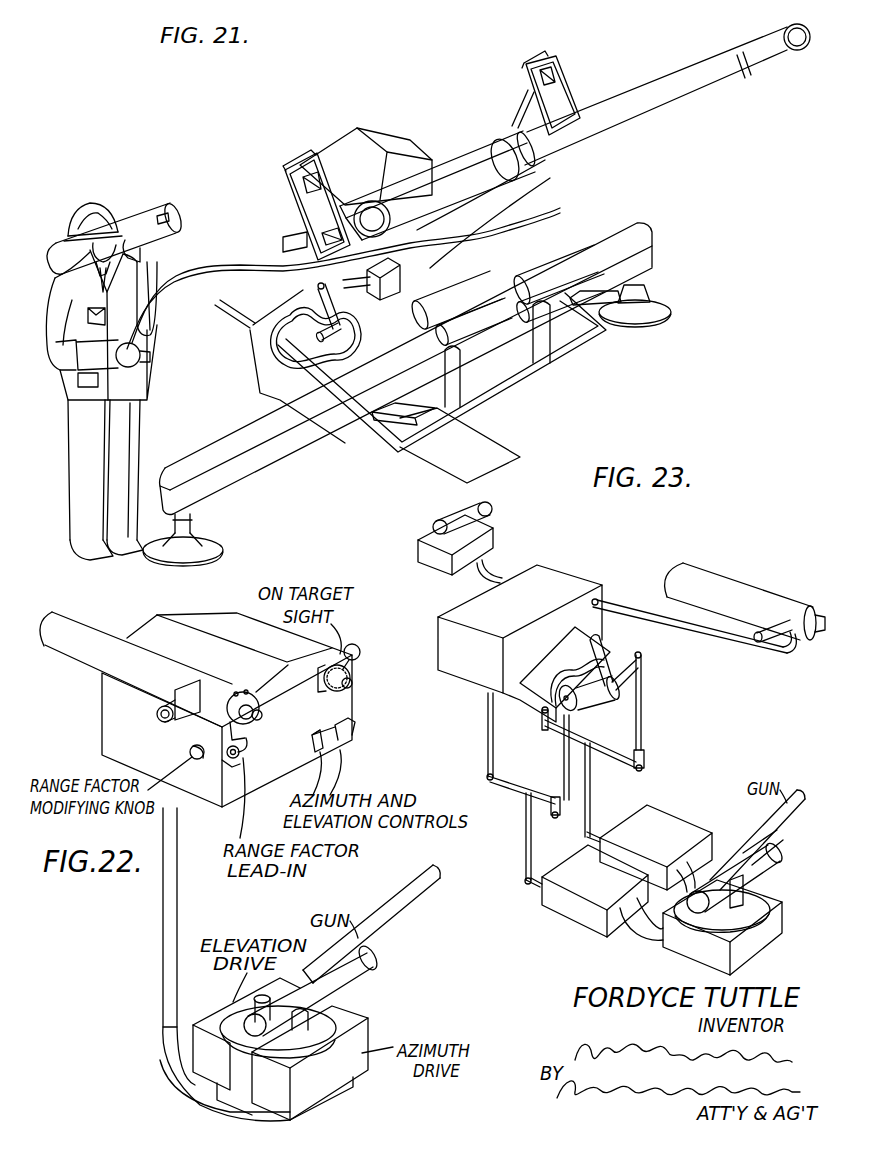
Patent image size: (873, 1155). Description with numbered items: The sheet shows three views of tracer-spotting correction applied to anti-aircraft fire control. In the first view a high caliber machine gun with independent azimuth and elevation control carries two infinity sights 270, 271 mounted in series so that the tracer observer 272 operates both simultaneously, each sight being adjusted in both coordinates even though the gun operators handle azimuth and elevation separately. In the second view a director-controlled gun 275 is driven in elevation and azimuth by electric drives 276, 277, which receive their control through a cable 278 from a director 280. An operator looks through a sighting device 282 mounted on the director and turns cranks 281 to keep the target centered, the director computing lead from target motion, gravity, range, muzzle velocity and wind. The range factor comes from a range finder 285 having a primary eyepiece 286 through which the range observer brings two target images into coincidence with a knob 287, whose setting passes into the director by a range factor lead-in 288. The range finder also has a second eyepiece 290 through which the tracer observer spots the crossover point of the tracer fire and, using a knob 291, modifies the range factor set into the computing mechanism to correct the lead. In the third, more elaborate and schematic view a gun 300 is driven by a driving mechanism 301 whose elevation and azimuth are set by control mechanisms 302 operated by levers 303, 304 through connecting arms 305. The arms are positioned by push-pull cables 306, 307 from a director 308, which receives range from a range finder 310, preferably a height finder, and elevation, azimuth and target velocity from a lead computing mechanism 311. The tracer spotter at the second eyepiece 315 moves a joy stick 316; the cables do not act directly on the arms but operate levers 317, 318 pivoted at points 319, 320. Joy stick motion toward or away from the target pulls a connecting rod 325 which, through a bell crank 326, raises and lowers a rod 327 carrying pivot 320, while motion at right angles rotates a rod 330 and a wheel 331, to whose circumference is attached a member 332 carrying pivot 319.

In FIG. 21, the infinity sight 270 is at (312, 158).
In FIG. 21, the infinity sight 271 is at (526, 68).
In FIG. 21, the tracer observer 272 is at (155, 275).
In FIG. 22, the gun 275 is at (397, 907).
In FIG. 22, the electric drive 276 is at (213, 1020).
In FIG. 22, the electric drive 277 is at (357, 1067).
In FIG. 22, the cable 278 is at (163, 922).
In FIG. 22, the director 280 is at (217, 803).
In FIG. 22, the cranks 281 is at (335, 727).
In FIG. 22, the sighting device 282 is at (352, 660).
In FIG. 22, the range finder 285 is at (90, 670).
In FIG. 22, the primary eyepiece 286 is at (257, 676).
In FIG. 22, the ranging knob 287 is at (222, 760).
In FIG. 22, the range factor lead-in 288 is at (245, 750).
In FIG. 22, the second eyepiece 290 is at (157, 712).
In FIG. 22, the range factor modifying knob 291 is at (190, 751).
In FIG. 23, the gun 300 is at (783, 822).
In FIG. 23, the driving mechanism 301 is at (770, 893).
In FIG. 23, the control mechanisms 302 is at (600, 923).
In FIG. 23, the lever 303 is at (537, 887).
In FIG. 23, the lever 304 is at (598, 830).
In FIG. 23, the connecting arms 305 is at (532, 848).
In FIG. 23, the push-pull cable 306 is at (490, 758).
In FIG. 23, the push-pull cable 307 is at (542, 718).
In FIG. 23, the director 308 is at (454, 613).
In FIG. 23, the range finder 310 is at (722, 580).
In FIG. 23, the lead computing mechanism 311 is at (500, 541).
In FIG. 23, the second eyepiece 315 is at (780, 610).
In FIG. 23, the joy stick 316 is at (602, 645).
In FIG. 23, the lever 317 is at (525, 800).
In FIG. 23, the lever 318 is at (607, 755).
In FIG. 23, the pivot point 319 is at (553, 808).
In FIG. 23, the pivot point 320 is at (645, 763).
In FIG. 23, the connecting rod 325 is at (634, 696).
In FIG. 23, the bell crank 326 is at (641, 658).
In FIG. 23, the rod 327 is at (643, 736).
In FIG. 23, the rod 330 is at (595, 700).
In FIG. 23, the wheel 331 is at (587, 712).
In FIG. 23, the member 332 is at (563, 757).